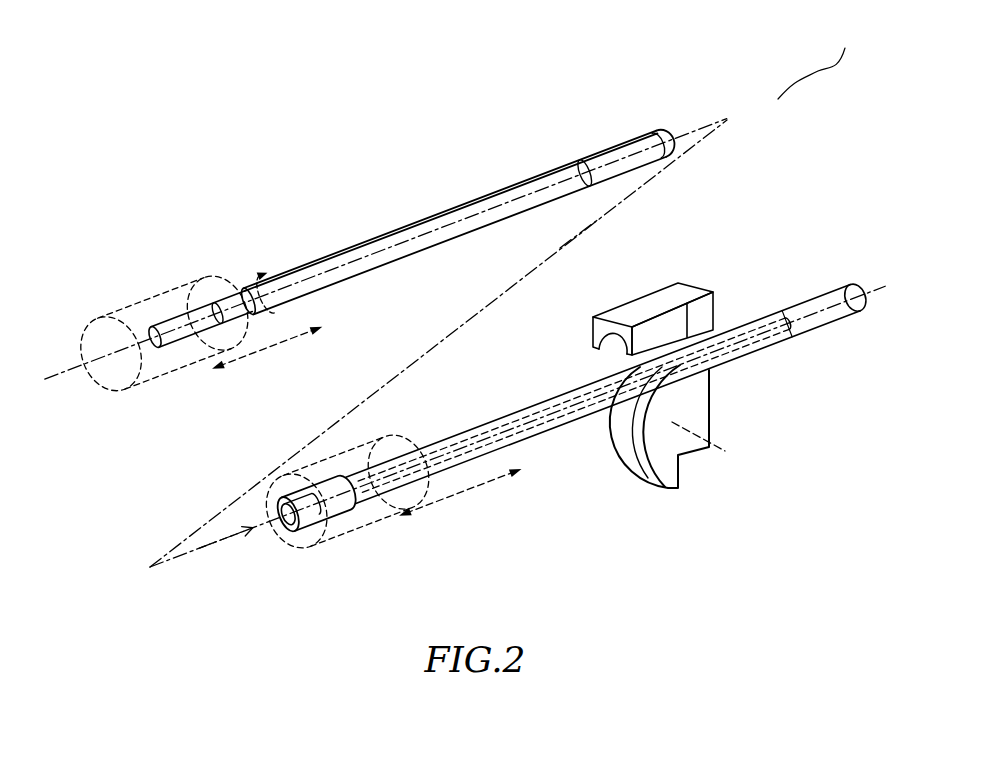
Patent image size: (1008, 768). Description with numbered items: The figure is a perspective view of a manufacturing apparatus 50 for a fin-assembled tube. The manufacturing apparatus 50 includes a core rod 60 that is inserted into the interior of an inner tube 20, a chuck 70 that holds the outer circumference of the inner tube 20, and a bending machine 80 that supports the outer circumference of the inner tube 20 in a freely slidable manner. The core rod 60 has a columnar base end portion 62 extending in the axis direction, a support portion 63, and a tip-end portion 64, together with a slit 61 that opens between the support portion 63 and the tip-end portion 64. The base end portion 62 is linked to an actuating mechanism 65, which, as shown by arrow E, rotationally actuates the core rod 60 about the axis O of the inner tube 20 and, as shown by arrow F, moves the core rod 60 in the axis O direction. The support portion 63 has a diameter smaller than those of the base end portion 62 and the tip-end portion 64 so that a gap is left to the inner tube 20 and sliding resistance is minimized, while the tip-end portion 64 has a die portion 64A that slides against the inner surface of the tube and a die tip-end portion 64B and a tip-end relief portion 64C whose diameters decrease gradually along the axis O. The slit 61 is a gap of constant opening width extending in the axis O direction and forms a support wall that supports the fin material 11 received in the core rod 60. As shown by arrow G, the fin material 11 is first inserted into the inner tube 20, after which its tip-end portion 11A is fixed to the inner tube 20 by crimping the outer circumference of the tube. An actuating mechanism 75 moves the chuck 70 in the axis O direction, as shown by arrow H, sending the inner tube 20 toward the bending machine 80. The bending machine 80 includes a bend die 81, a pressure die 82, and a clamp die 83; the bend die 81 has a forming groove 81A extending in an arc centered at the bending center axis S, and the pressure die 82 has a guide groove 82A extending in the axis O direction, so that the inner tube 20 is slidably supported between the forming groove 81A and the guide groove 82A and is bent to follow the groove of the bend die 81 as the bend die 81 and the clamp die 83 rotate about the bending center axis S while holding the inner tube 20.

The manufacturing apparatus 50 is at (775, 102).
The core rod 60 is at (485, 196).
The slit 61 is at (430, 218).
The base end portion 62 is at (200, 282).
The support portion 63 is at (303, 266).
The tip-end portion 64 is at (648, 88).
The die portion 64A is at (678, 137).
The die tip-end portion 64B is at (664, 135).
The tip-end relief portion 64C is at (669, 148).
The actuating mechanism 65 is at (160, 290).
The chuck 70 is at (313, 540).
The actuating mechanism 75 is at (365, 528).
The fin material 11 is at (490, 427).
The tip-end portion 11A is at (787, 320).
The inner tube 20 is at (817, 330).
The bending machine 80 is at (662, 382).
The bend die 81 is at (612, 455).
The forming groove 81A is at (633, 452).
The pressure die 82 is at (618, 305).
The guide groove 82A is at (598, 352).
The clamp die 83 is at (700, 292).
The arrow E is at (253, 280).
The arrow F is at (257, 367).
The arrow G is at (218, 546).
The arrow H is at (447, 517).
The axis O is at (607, 225).
The bending center axis S is at (722, 447).